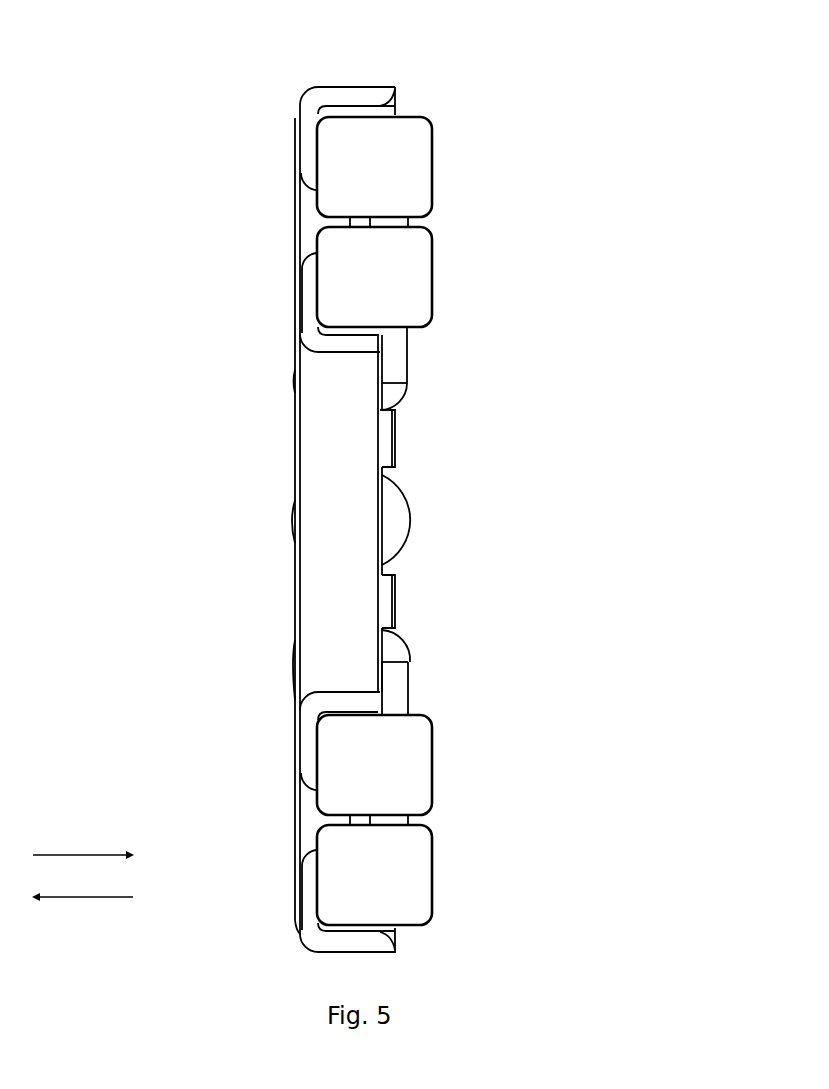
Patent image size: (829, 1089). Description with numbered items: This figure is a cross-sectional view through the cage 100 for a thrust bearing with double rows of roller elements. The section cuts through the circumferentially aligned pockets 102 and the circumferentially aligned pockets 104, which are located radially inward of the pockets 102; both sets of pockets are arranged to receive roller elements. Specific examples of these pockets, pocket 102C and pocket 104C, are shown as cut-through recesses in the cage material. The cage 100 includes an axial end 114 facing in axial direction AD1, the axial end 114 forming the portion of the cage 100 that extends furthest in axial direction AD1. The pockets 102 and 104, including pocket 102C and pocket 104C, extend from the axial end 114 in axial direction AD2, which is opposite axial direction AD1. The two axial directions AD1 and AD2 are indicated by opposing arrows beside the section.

The cage 100 is at (548, 46).
The axial end 114 is at (390, 103).
The pocket 102C is at (397, 175).
The pocket 104C is at (395, 282).
The circumferentially aligned pockets 104 is at (395, 770).
The circumferentially aligned pockets 102 is at (395, 887).
The axial direction AD1 is at (63, 855).
The axial direction AD2 is at (80, 898).